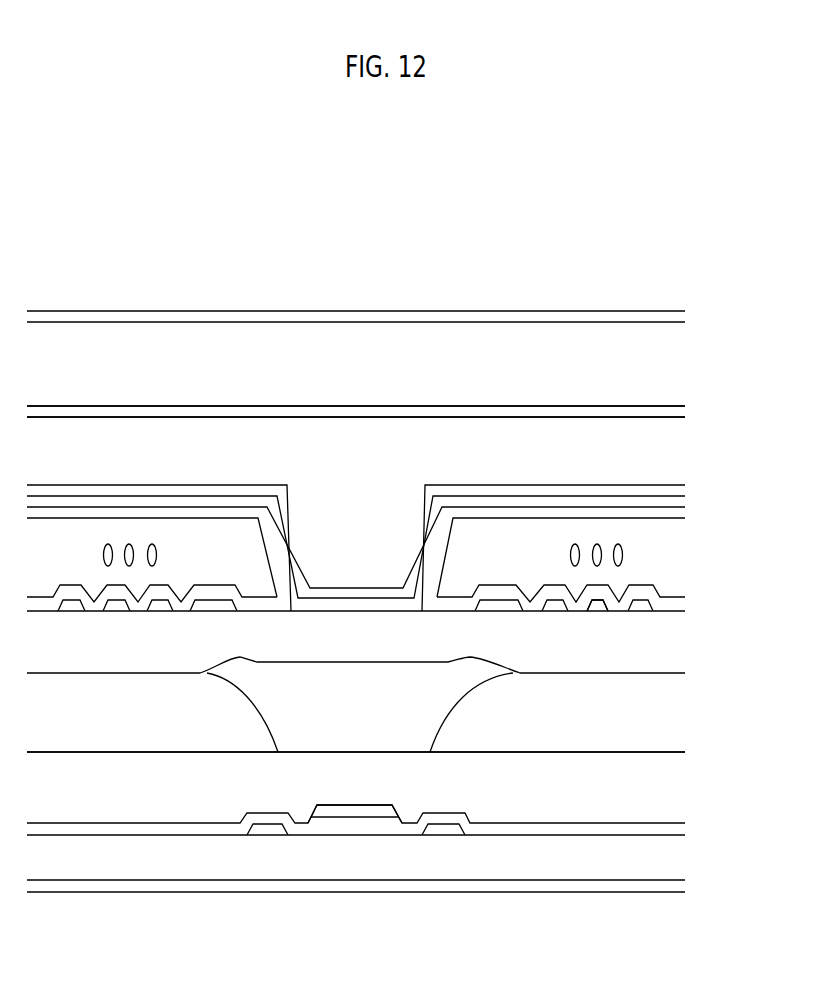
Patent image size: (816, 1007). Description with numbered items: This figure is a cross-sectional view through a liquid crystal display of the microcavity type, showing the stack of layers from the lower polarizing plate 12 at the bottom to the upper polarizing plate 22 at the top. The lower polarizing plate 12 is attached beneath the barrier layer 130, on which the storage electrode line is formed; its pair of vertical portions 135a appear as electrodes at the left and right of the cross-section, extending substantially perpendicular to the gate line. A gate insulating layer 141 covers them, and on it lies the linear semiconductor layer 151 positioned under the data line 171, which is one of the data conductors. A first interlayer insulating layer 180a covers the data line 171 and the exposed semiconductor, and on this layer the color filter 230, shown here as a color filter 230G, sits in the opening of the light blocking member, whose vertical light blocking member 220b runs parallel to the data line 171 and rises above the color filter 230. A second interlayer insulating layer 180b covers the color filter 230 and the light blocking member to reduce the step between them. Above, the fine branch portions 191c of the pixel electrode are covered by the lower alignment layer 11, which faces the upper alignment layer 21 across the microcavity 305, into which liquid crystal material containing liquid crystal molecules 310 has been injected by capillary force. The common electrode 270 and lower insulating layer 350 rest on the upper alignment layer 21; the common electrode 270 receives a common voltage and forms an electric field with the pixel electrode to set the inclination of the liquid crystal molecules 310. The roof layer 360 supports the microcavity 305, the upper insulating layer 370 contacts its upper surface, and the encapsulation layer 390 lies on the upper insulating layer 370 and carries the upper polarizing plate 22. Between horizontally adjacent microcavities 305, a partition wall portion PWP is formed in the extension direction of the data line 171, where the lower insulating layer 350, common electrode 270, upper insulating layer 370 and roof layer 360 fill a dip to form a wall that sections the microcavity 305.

The partition wall portion PWP is at (352, 510).
The upper polarizing plate 22 is at (684, 315).
The encapsulation layer 390 is at (674, 374).
The upper insulating layer 370 is at (672, 406).
The roof layer 360 is at (672, 433).
The lower insulating layer 350 is at (672, 487).
The common electrode 270 is at (672, 500).
The upper alignment layer 21 is at (672, 513).
The microcavity 305 is at (645, 575).
The liquid crystal molecule 310 is at (626, 553).
The lower alignment layer 11 is at (672, 607).
The color filter 230 is at (52, 713).
The color filter 230G is at (635, 715).
The second interlayer insulating layer 180b is at (100, 650).
The vertical light blocking member 220b is at (412, 717).
The first interlayer insulating layer 180a is at (192, 797).
The data line 171 is at (372, 808).
The linear semiconductor layer 151 is at (328, 818).
The gate insulating layer 141 is at (537, 827).
The vertical portion of storage electrode line 135a is at (268, 838).
The barrier layer 130 is at (142, 863).
The lower polarizing plate 12 is at (225, 887).
The fine branch portion 191c is at (594, 603).